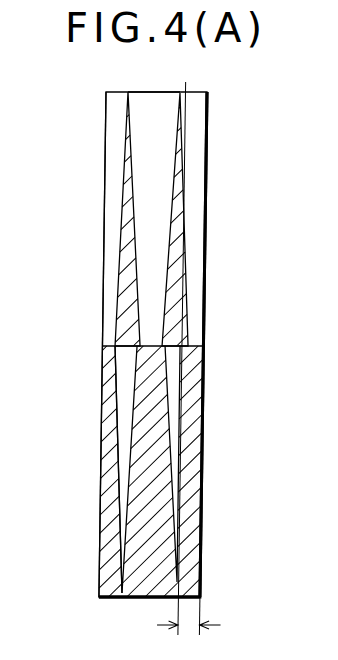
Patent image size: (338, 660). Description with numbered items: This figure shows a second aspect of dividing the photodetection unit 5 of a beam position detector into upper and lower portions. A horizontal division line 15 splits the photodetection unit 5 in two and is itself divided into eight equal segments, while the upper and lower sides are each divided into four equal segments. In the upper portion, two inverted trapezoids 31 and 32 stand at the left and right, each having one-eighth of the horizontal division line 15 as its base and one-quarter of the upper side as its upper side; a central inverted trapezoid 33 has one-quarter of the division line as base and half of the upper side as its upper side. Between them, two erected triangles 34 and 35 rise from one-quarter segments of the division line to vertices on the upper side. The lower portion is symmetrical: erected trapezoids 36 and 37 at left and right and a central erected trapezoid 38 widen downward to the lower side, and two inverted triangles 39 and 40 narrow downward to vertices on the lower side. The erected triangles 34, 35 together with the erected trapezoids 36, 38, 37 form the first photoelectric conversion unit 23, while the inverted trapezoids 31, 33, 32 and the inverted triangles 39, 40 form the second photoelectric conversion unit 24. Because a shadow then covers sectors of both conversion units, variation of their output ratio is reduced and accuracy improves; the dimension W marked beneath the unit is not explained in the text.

The photodetection unit 5 is at (227, 246).
The horizontal division line 15 is at (150, 332).
The first photoelectric conversion unit 23 is at (113, 258).
The second photoelectric conversion unit 24 is at (111, 467).
The inverted trapezoid 31 is at (110, 206).
The inverted trapezoid 32 is at (196, 186).
The inverted trapezoid 33 is at (153, 152).
The erected triangle 34 is at (122, 308).
The erected triangle 35 is at (172, 305).
The erected trapezoid 36 is at (108, 527).
The erected trapezoid 37 is at (190, 513).
The erected trapezoid 38 is at (152, 583).
The inverted triangle 39 is at (125, 420).
The inverted triangle 40 is at (172, 387).
The wall thickness W is at (202, 365).